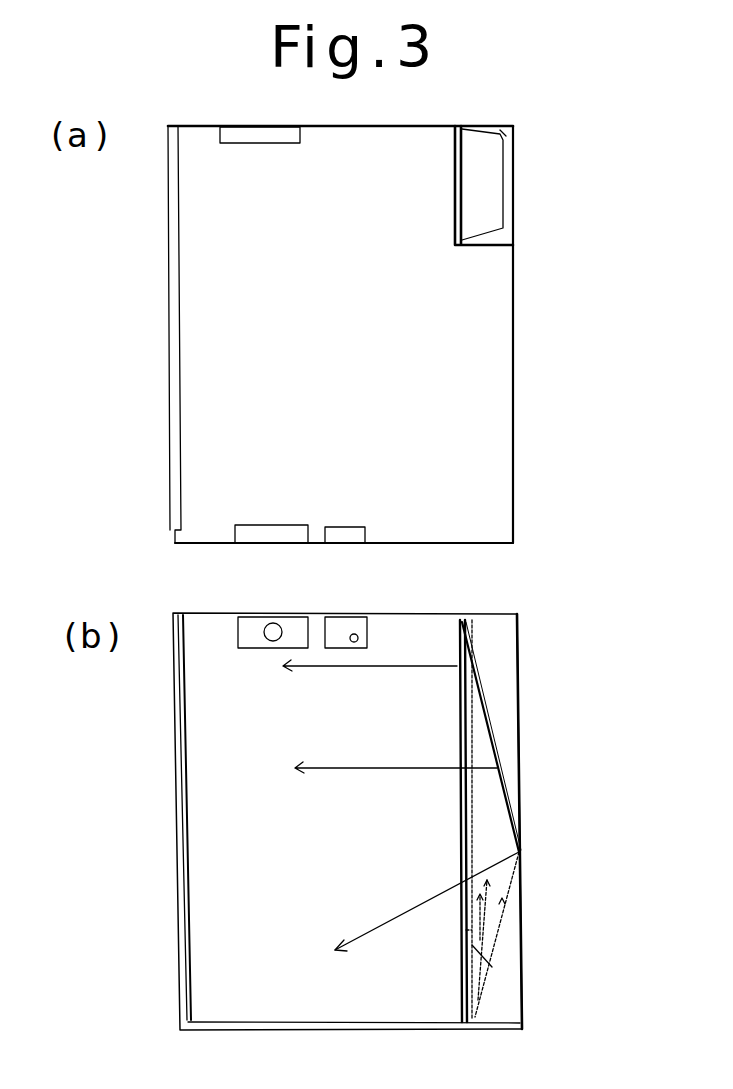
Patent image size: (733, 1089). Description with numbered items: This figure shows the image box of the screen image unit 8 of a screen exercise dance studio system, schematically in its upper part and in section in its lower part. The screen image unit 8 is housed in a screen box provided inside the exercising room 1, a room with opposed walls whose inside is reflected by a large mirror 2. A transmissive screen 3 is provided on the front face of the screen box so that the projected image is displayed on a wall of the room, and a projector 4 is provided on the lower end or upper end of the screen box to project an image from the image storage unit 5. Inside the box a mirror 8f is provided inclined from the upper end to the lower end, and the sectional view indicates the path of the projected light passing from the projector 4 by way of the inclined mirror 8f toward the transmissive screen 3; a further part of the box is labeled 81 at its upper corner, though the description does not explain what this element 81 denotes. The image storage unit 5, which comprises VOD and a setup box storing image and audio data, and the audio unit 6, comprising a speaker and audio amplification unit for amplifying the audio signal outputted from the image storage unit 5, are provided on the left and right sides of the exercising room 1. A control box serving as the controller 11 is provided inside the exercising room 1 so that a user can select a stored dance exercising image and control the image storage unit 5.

The exercising room 1 is at (235, 398).
The large mirror 2 is at (178, 326).
The transmissive screen 3 is at (455, 178).
The projector 4 is at (482, 975).
The image storage unit 5 is at (275, 135).
The audio unit 6 is at (262, 530).
The screen image unit 8 is at (472, 187).
The controller 11 is at (346, 537).
The panel hinge 81 is at (513, 130).
The mirror 8f is at (487, 220).